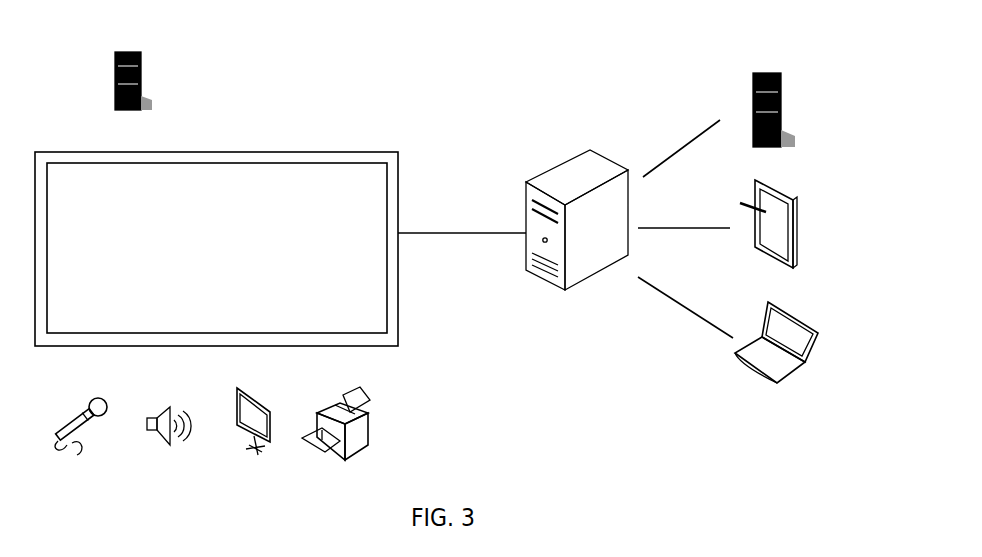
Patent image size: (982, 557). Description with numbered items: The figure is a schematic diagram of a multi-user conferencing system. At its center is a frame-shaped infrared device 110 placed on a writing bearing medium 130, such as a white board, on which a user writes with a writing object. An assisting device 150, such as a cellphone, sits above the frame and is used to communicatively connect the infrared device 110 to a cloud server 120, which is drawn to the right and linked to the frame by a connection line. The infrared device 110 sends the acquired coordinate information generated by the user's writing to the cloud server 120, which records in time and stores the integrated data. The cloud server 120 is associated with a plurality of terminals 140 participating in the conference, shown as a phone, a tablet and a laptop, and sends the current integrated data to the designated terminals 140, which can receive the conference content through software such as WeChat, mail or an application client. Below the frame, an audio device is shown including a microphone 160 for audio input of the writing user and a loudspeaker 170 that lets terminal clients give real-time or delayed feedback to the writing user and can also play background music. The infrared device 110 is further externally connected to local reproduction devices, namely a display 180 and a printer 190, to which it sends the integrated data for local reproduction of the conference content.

The infrared device 110 is at (200, 158).
The cloud server 120 is at (577, 202).
The writing bearing medium 130 is at (217, 248).
The terminals 140 is at (798, 228).
The assisting device 150 is at (133, 152).
The microphone 160 is at (83, 346).
The loudspeaker 170 is at (168, 346).
The display 180 is at (255, 346).
The printer 190 is at (339, 346).